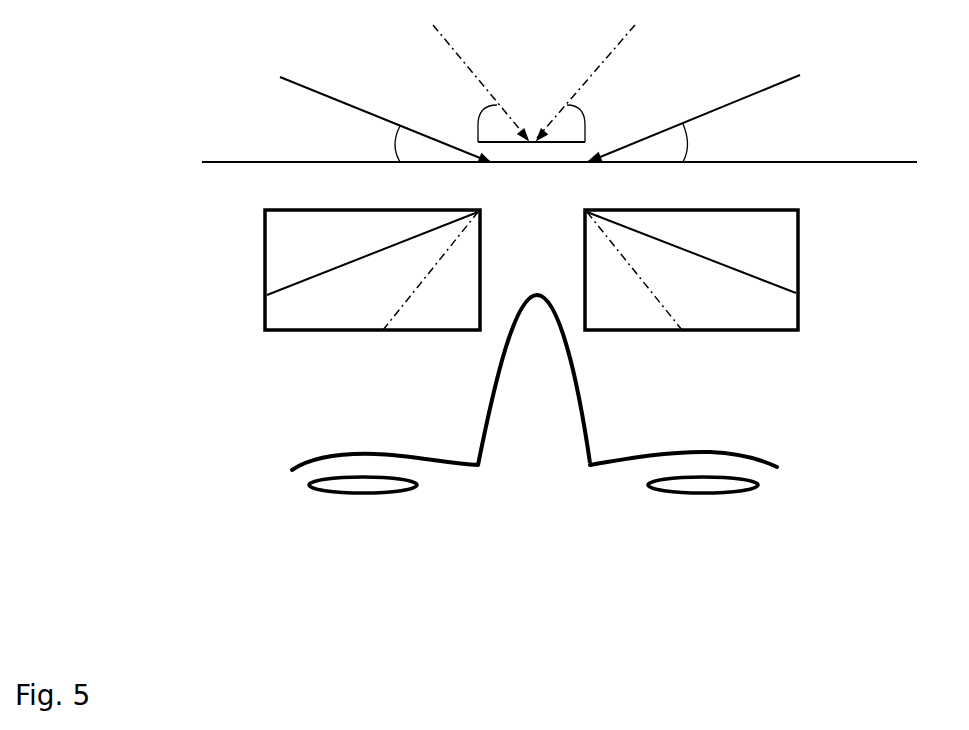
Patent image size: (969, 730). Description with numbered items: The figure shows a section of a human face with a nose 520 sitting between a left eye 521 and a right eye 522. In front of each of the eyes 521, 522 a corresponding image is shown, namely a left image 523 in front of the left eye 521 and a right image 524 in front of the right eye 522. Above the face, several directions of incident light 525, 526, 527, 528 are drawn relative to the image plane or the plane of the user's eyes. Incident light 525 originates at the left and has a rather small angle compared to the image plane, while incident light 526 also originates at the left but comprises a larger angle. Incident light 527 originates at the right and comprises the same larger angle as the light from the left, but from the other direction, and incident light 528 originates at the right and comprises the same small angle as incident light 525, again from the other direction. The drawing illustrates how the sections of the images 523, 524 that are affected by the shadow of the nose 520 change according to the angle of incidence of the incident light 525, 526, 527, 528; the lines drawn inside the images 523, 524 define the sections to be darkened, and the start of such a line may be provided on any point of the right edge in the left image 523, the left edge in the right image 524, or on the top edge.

The nose 520 is at (580, 413).
The left eye 521 is at (308, 484).
The right eye 522 is at (758, 486).
The left image 523 is at (265, 275).
The right image 524 is at (798, 275).
The incident light 525 is at (310, 89).
The incident light 526 is at (464, 64).
The incident light 527 is at (603, 63).
The incident light 528 is at (788, 79).